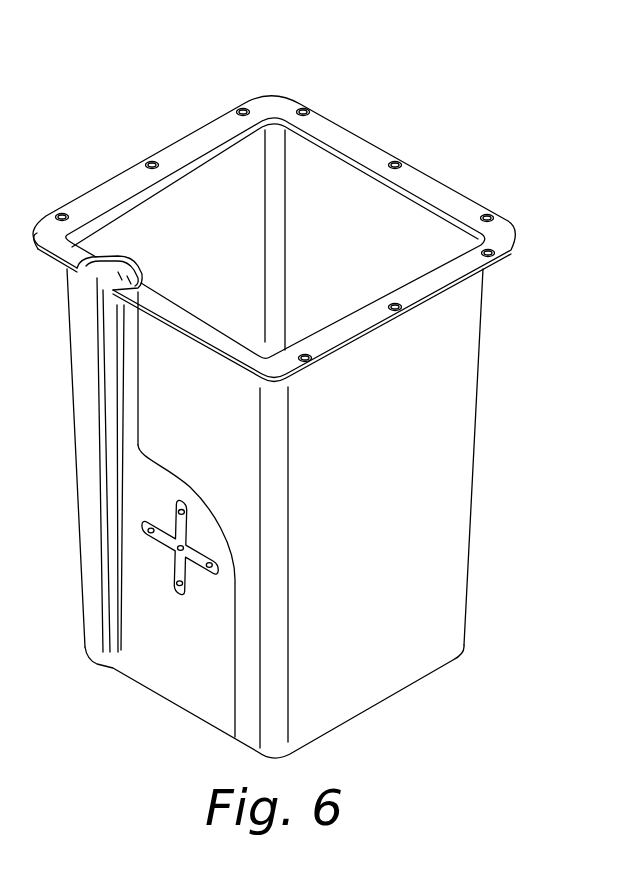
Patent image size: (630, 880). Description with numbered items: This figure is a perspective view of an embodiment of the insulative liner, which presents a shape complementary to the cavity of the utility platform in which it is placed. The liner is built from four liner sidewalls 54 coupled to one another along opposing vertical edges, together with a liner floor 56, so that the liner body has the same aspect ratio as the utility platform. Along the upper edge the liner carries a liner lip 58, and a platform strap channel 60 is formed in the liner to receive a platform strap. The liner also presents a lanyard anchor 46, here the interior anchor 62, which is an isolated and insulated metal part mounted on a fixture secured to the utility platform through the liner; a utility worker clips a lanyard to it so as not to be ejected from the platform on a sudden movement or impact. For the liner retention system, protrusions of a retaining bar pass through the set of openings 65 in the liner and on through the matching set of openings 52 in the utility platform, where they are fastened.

The lanyard anchor 46 is at (198, 578).
The set of openings 52 is at (0, 201).
The liner sidewalls 54 is at (190, 190).
The liner floor 56 is at (394, 721).
The liner lip 58 is at (503, 233).
The platform strap channel 60 is at (127, 345).
The interior anchor 62 is at (163, 555).
The set of openings 65 is at (147, 162).